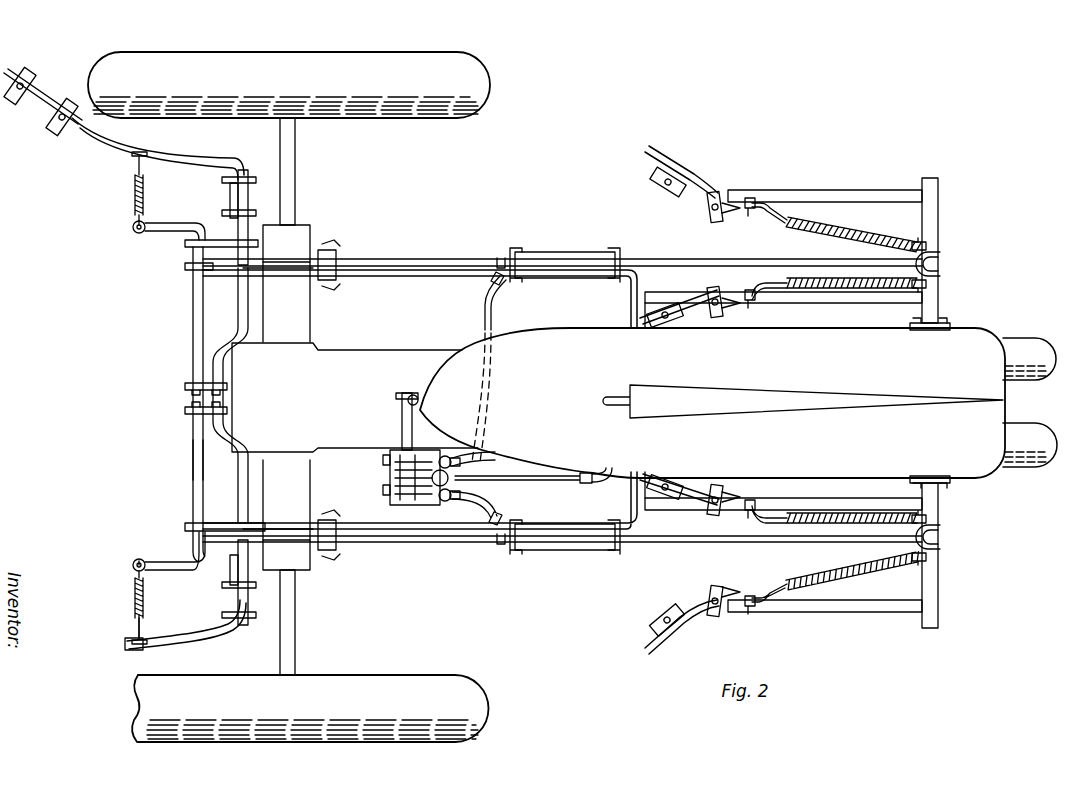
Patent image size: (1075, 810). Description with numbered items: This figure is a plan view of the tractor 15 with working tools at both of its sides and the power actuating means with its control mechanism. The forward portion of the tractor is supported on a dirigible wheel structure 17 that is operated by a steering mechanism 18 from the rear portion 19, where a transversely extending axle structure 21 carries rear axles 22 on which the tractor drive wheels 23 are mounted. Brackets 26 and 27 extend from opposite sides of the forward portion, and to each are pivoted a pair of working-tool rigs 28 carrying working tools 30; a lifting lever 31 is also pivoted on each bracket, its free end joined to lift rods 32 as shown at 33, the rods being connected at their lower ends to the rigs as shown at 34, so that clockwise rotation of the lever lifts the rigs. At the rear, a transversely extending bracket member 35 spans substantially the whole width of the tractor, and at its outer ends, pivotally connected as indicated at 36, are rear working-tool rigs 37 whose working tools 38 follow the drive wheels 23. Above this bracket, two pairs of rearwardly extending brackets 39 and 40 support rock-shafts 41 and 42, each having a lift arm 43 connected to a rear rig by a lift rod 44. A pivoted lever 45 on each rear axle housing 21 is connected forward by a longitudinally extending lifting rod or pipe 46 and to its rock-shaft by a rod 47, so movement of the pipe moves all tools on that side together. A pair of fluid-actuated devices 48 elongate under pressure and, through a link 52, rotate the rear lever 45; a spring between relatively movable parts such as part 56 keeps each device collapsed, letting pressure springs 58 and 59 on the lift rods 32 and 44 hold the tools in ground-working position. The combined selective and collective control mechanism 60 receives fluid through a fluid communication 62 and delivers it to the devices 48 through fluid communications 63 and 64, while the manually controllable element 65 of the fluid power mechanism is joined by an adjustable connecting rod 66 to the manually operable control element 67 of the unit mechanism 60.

The tractor 15 is at (568, 336).
The dirigible wheel structure 17 is at (1028, 465).
The steering mechanism 18 is at (606, 397).
The rear portion 19 is at (336, 352).
The axle structure 21 is at (312, 312).
The rear axles 22 is at (296, 180).
The tractor drive wheels 23 is at (404, 60).
The bracket 26 is at (940, 312).
The bracket 27 is at (940, 588).
The working-tool rigs 28 is at (818, 190).
The working tools 30 is at (672, 198).
The lifting lever 31 is at (920, 262).
The lift rods 32 is at (872, 244).
The connection of lift rods to lifting lever 33 is at (926, 246).
The connection of lift rods to working-tool rigs 34 is at (756, 198).
The bracket member 35 is at (212, 330).
The pivotal connection 36 is at (241, 175).
The working-tool rigs 37 is at (100, 150).
The working tools 38 is at (20, 120).
The rearwardly extending brackets 39 is at (186, 246).
The rearwardly extending brackets 40 is at (184, 411).
The rock-shaft 41 is at (190, 289).
The rock-shaft 42 is at (191, 470).
The lift arm 43 is at (165, 226).
The lift rod 44 is at (134, 203).
The pivoted lever 45 is at (348, 246).
The lifting rod or pipe 46 is at (456, 258).
The rod 47 is at (296, 277).
The fluid-actuated devices 48 is at (550, 250).
The link 52 is at (580, 270).
The relatively movable part 56 is at (500, 257).
The pressure springs 58 is at (845, 226).
The pressure springs 59 is at (109, 416).
The combined selective and collective control mechanism 60 is at (388, 470).
The fluid communication 62 is at (498, 456).
The fluid communication 63 is at (492, 326).
The fluid communication 64 is at (490, 514).
The manually controllable element 65 is at (612, 470).
The adjustable connecting rod 66 is at (552, 482).
The manually operable control element 67 is at (440, 460).